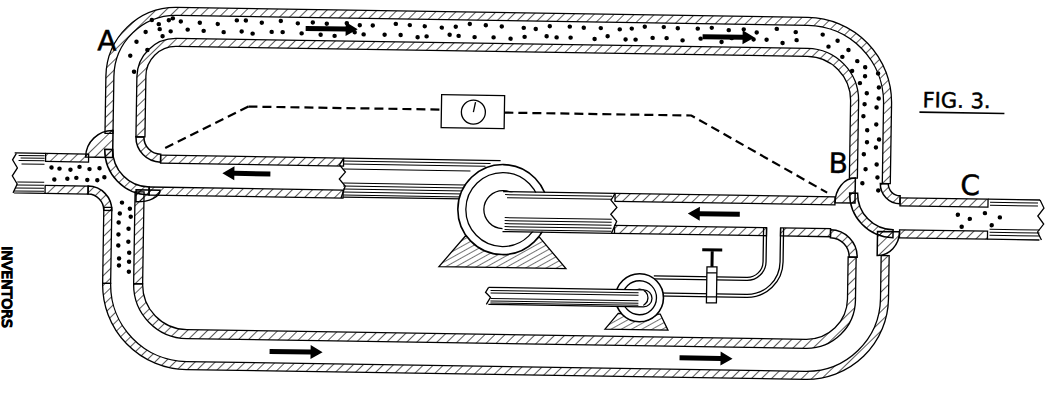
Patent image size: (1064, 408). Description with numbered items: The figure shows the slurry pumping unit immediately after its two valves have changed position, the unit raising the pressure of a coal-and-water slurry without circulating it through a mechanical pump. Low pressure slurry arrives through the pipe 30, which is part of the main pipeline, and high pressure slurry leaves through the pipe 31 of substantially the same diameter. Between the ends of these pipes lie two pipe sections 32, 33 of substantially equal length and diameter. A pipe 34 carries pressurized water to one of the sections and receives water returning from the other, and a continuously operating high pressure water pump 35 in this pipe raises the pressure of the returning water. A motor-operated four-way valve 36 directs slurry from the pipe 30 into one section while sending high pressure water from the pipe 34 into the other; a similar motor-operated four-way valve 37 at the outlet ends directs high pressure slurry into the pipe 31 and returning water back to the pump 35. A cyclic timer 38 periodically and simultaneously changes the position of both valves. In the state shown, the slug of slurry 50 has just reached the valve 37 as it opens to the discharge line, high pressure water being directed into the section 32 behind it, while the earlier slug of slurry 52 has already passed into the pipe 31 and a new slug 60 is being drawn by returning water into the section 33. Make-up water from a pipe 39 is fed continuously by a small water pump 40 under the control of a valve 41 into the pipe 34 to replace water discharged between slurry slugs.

The pipe 30 is at (60, 160).
The pipe 31 is at (974, 233).
The pipe section 32 is at (364, 52).
The pipe section 33 is at (362, 336).
The pipe 34 is at (364, 200).
The high pressure water pump 35 is at (547, 193).
The motor-operated four-way valve 36 is at (87, 203).
The motor-operated four-way valve 37 is at (900, 197).
The cyclic timer 38 is at (503, 99).
The pipe 39 is at (782, 263).
The small water pump 40 is at (667, 306).
The valve 41 is at (709, 264).
The slug of slurry 50 is at (465, 147).
The slug of slurry 52 is at (979, 223).
The slug of slurry 60 is at (123, 237).